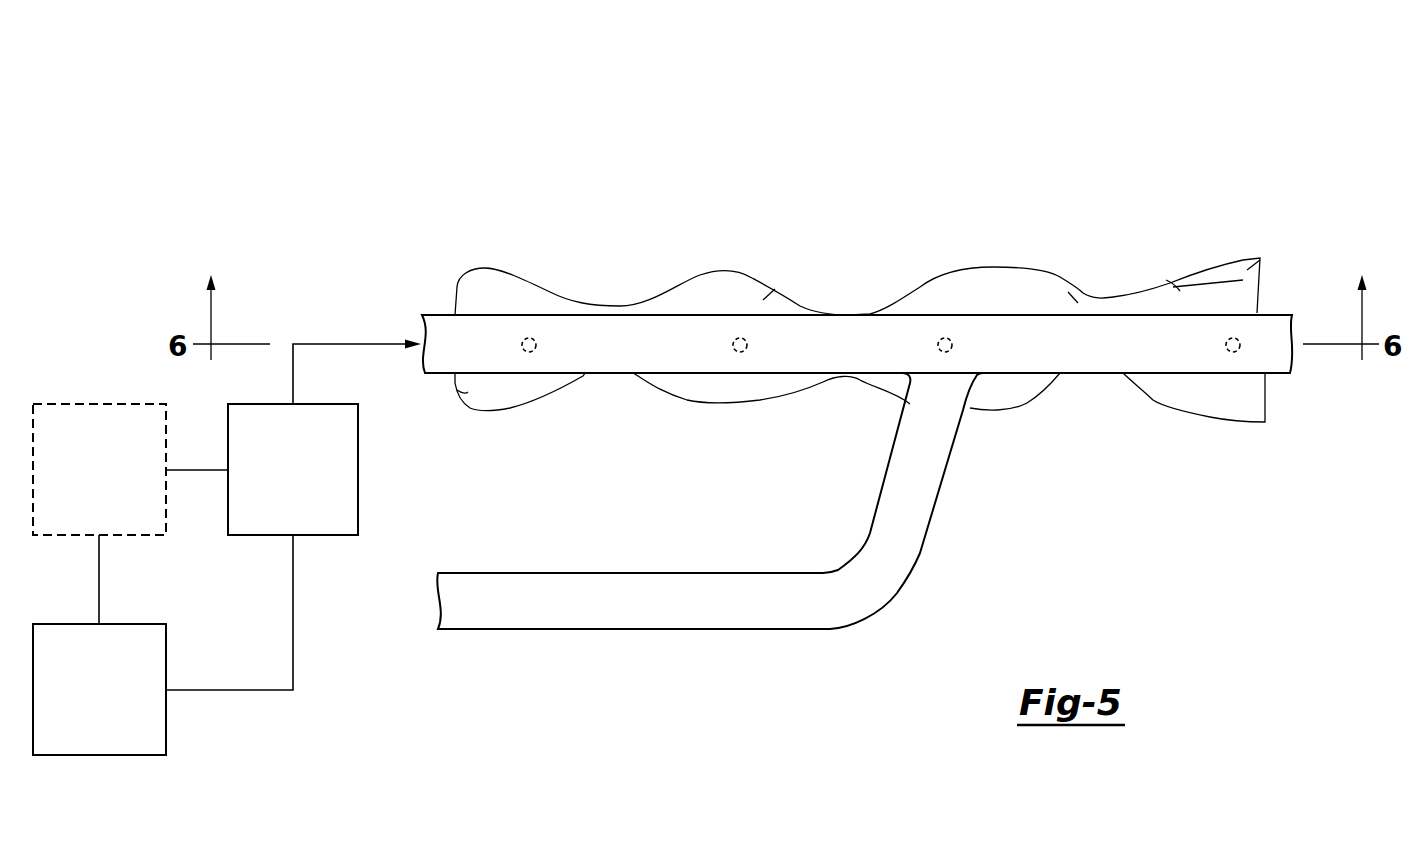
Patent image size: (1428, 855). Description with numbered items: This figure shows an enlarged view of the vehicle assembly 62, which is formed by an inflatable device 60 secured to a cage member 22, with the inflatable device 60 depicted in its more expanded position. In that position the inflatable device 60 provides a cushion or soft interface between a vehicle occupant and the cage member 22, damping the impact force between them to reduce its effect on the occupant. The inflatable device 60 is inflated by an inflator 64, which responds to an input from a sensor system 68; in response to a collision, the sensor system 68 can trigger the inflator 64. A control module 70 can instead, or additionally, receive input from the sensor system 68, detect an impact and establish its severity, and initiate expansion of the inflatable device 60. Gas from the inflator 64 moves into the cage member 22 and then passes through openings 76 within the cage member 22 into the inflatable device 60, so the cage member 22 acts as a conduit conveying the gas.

The cage member 22 is at (950, 462).
The inflatable device 60 is at (1003, 265).
The vehicle assembly 62 is at (1142, 240).
The inflator 64 is at (282, 502).
The sensor system 68 is at (88, 722).
The control module 70 is at (88, 517).
The openings 76 is at (740, 362).